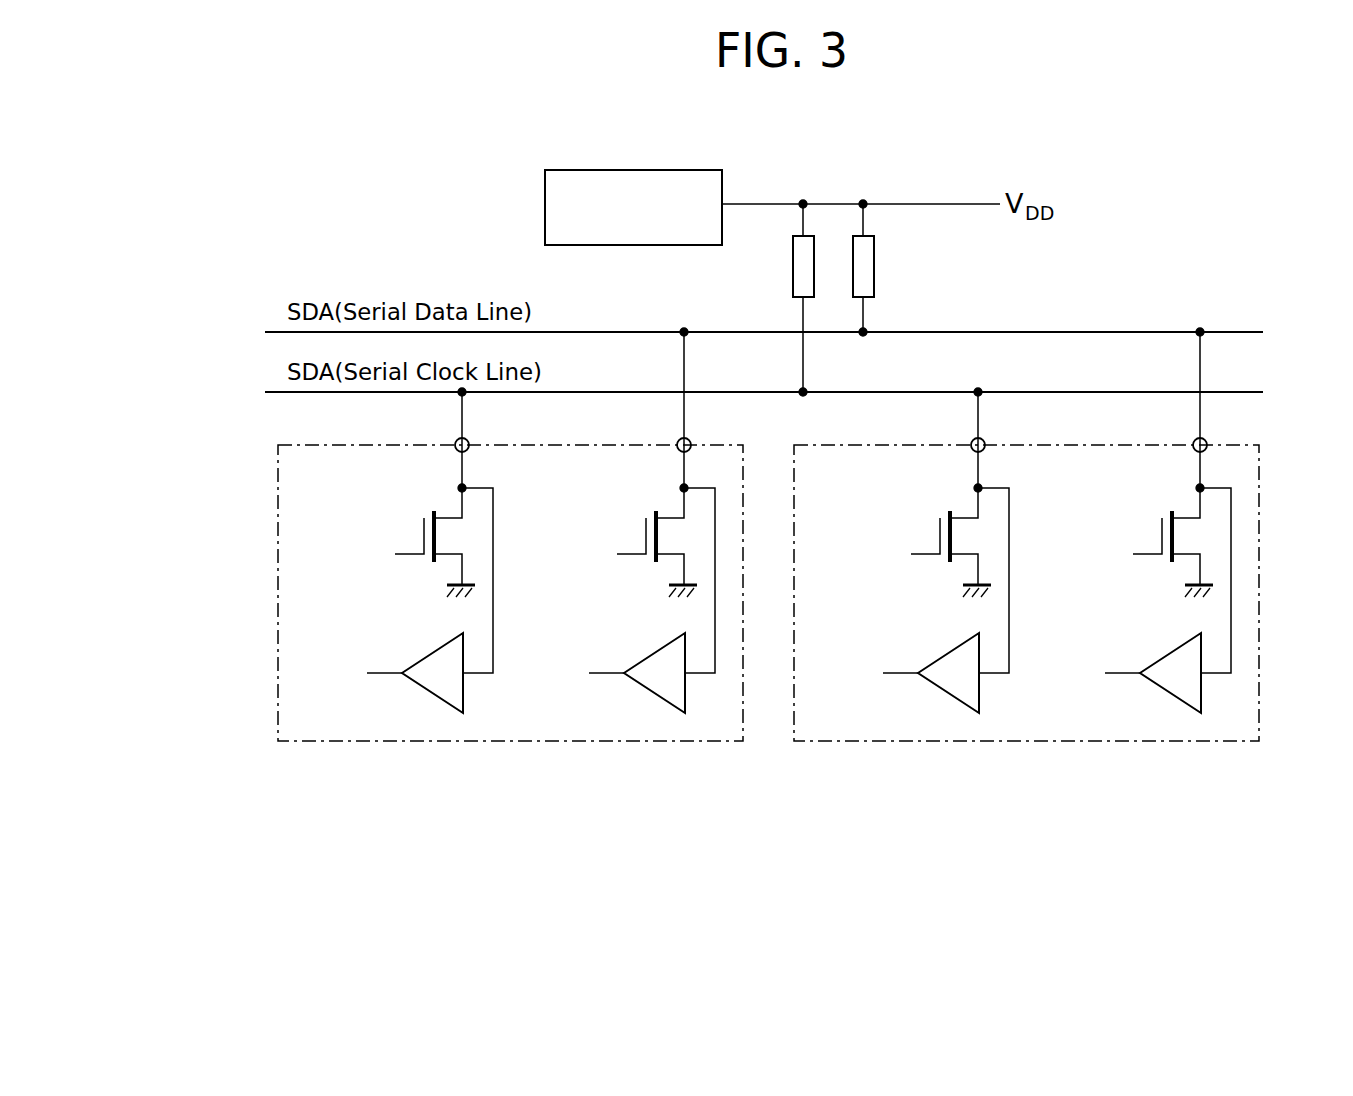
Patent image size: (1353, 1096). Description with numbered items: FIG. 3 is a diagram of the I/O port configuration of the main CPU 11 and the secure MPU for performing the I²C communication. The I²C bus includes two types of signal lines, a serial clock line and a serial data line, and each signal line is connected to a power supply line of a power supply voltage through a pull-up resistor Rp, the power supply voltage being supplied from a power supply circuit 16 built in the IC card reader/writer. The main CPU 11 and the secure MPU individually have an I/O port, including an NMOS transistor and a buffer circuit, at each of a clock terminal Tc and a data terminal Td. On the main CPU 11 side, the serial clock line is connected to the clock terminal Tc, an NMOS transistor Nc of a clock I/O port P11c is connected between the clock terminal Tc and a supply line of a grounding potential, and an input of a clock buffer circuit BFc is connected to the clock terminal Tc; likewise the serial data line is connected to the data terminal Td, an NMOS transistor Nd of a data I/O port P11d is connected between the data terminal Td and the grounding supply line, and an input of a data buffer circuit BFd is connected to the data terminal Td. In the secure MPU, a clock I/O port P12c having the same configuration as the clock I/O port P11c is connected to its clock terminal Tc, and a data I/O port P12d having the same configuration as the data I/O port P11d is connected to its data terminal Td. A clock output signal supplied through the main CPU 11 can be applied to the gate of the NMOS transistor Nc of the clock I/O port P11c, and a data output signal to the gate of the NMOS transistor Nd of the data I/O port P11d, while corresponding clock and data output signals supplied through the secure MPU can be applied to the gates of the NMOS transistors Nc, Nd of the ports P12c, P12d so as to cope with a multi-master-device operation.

The power supply circuit 16 is at (598, 170).
The main CPU 11 is at (278, 543).
The pull-up resistor Rp is at (831, 300).
The clock terminal Tc is at (469, 442).
The data terminal Td is at (691, 442).
The NMOS transistor Nc is at (426, 534).
The NMOS transistor Nd is at (648, 534).
The clock buffer circuit BFc is at (429, 693).
The data buffer circuit BFd is at (651, 693).
The clock I/O port P11c is at (485, 806).
The data I/O port P11d is at (707, 806).
The clock I/O port P12c is at (1001, 806).
The data I/O port P12d is at (1223, 806).